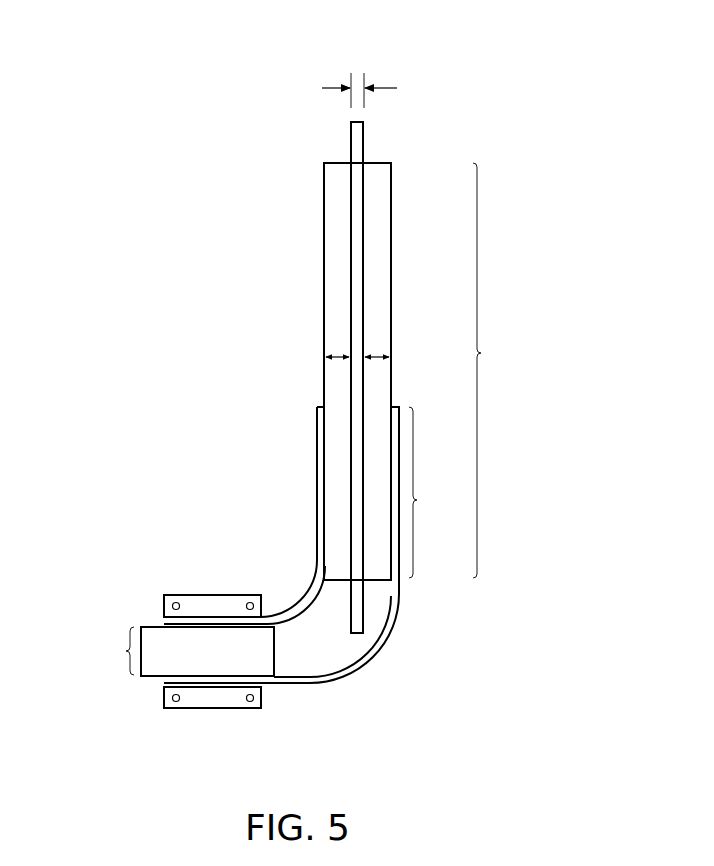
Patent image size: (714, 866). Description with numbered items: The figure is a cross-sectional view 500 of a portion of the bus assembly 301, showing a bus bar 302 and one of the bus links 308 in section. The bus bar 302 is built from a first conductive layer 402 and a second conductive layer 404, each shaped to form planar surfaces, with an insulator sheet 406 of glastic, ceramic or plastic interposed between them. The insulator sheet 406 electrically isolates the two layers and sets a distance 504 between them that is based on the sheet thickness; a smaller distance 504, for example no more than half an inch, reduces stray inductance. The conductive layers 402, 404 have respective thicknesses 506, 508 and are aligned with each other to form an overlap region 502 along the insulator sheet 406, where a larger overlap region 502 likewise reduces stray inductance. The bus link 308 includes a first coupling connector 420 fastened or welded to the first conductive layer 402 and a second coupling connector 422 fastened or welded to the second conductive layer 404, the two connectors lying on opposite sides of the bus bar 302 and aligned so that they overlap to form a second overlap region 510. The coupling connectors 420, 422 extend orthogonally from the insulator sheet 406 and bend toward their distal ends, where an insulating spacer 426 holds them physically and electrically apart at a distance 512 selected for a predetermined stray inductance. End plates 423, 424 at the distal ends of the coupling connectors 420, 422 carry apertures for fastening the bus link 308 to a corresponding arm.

The cross-sectional view 500 is at (160, 70).
The bus assembly 301 is at (152, 289).
The bus bar 302 is at (309, 157).
The bus link 308 is at (237, 549).
The first conductive layer 402 is at (324, 222).
The second conductive layer 404 is at (378, 277).
The insulator sheet 406 is at (364, 143).
The distance 504 is at (388, 85).
The thickness of first conductive layer 506 is at (340, 362).
The thickness of second conductive layer 508 is at (380, 362).
The overlap region 502 is at (500, 370).
The second overlap region 510 is at (435, 492).
The first coupling connector 420 is at (293, 600).
The second coupling connector 422 is at (312, 684).
The end plate 423 is at (195, 594).
The end plate 424 is at (195, 709).
The spacer 426 is at (224, 661).
The distance 512 is at (107, 651).